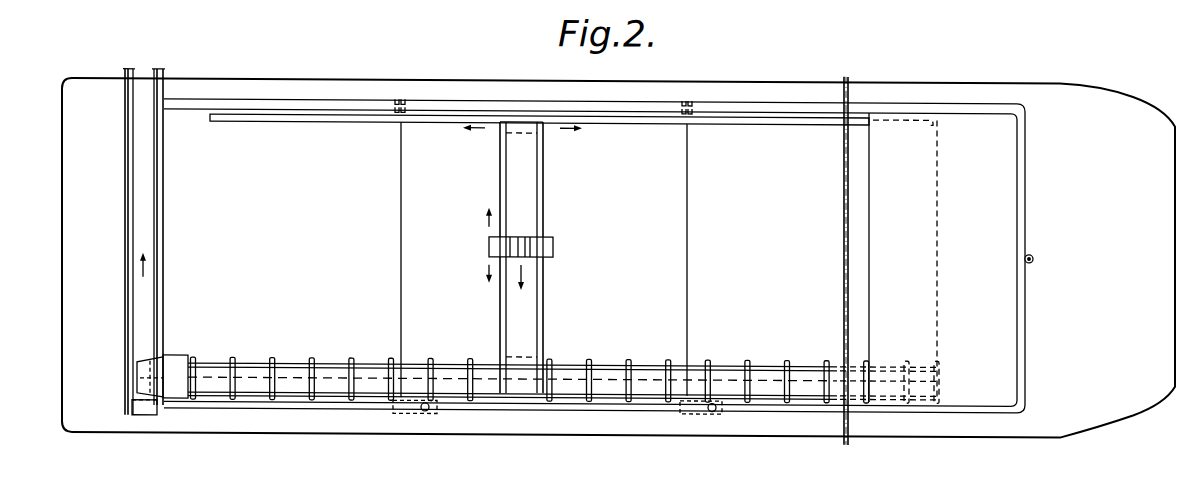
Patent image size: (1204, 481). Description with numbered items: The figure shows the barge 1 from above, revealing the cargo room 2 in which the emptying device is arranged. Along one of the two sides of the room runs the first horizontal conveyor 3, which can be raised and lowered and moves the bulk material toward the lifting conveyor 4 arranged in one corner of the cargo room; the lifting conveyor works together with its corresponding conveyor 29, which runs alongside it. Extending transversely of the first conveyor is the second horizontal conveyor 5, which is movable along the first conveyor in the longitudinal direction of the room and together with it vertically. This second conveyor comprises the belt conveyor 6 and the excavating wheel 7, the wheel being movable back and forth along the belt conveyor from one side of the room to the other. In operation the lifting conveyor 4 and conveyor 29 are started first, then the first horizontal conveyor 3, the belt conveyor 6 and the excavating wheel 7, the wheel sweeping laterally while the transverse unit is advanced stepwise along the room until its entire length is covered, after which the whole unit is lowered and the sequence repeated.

The barge 1 is at (421, 72).
The cargo room 2 is at (772, 255).
The first horizontal conveyor 3 is at (572, 356).
The lifting conveyor 4 is at (172, 359).
The second horizontal conveyor 5 is at (546, 200).
The belt conveyor 6 is at (527, 299).
The excavating wheel 7 is at (553, 245).
The conveyor 29 is at (147, 180).